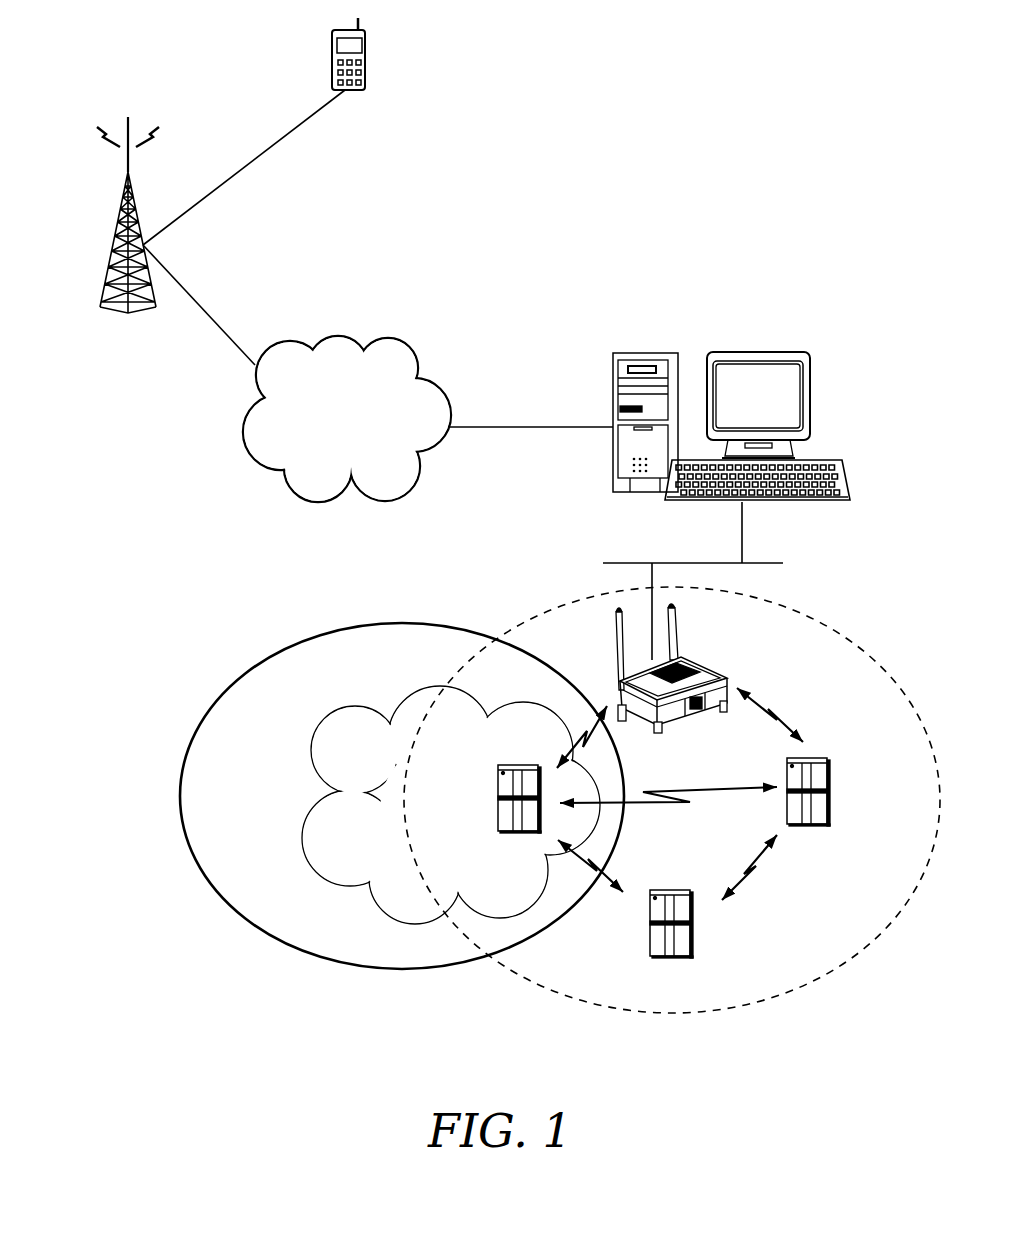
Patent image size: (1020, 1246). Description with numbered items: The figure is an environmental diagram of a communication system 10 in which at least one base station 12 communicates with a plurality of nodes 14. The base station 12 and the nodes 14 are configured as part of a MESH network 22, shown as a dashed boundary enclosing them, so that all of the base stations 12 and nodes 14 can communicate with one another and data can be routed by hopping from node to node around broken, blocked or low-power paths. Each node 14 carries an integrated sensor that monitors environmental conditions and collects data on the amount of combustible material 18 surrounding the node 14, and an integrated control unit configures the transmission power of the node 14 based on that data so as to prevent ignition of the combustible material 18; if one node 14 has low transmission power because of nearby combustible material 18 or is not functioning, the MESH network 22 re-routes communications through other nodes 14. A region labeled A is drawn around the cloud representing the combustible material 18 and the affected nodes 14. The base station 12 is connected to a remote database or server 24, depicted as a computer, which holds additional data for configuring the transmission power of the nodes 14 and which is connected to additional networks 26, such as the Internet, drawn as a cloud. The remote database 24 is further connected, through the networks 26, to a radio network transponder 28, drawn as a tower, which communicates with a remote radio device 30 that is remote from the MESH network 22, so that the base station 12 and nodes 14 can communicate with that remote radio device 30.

The communication system 10 is at (730, 131).
The base station 12 is at (700, 670).
The node 14 is at (498, 818).
The combustible material 18 is at (331, 725).
The MESH network 22 is at (830, 630).
The remote database or server 24 is at (797, 352).
The additional networks 26 is at (416, 351).
The radio network transponder 28 is at (117, 243).
The remote radio device 30 is at (366, 60).
The area A is at (267, 660).